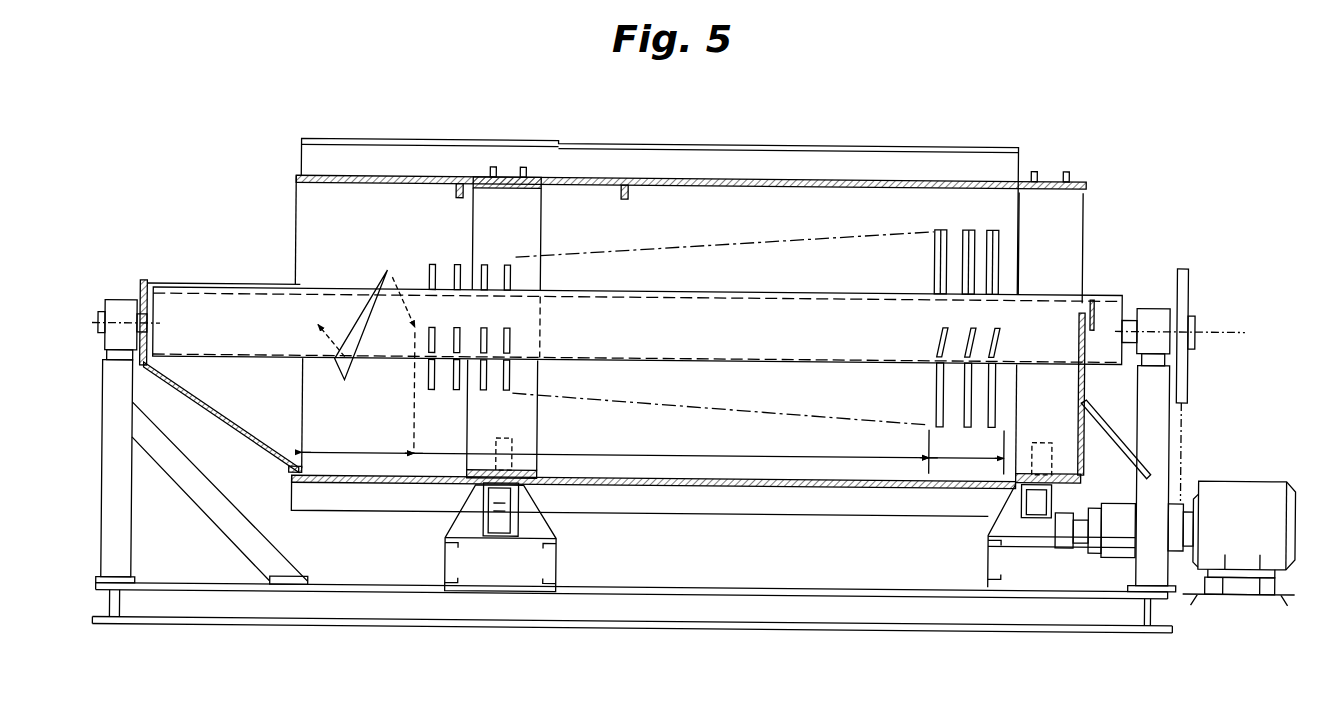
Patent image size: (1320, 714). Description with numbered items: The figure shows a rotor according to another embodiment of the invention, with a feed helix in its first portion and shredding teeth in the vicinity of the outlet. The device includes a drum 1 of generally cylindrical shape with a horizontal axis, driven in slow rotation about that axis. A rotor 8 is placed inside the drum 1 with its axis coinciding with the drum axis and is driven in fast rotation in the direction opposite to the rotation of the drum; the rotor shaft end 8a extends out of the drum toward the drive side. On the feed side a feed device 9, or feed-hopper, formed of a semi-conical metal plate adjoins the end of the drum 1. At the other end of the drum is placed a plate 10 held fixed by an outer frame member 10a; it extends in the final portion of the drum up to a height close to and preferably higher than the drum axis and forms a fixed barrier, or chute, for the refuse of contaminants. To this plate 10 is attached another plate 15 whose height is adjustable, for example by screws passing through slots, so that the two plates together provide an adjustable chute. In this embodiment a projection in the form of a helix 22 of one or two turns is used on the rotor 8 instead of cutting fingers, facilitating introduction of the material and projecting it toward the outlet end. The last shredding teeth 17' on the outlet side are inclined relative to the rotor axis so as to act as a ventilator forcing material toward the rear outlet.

The drum 1 is at (820, 172).
The rotor 8 is at (728, 290).
The drum shaft end with pulley 8a is at (1222, 321).
The feed device 9 is at (252, 440).
The plate 10 is at (1118, 386).
The outer frame member 10a is at (1120, 432).
The plate 15 is at (1097, 304).
The shredding teeth 17' is at (780, 315).
The helix 22 is at (383, 285).